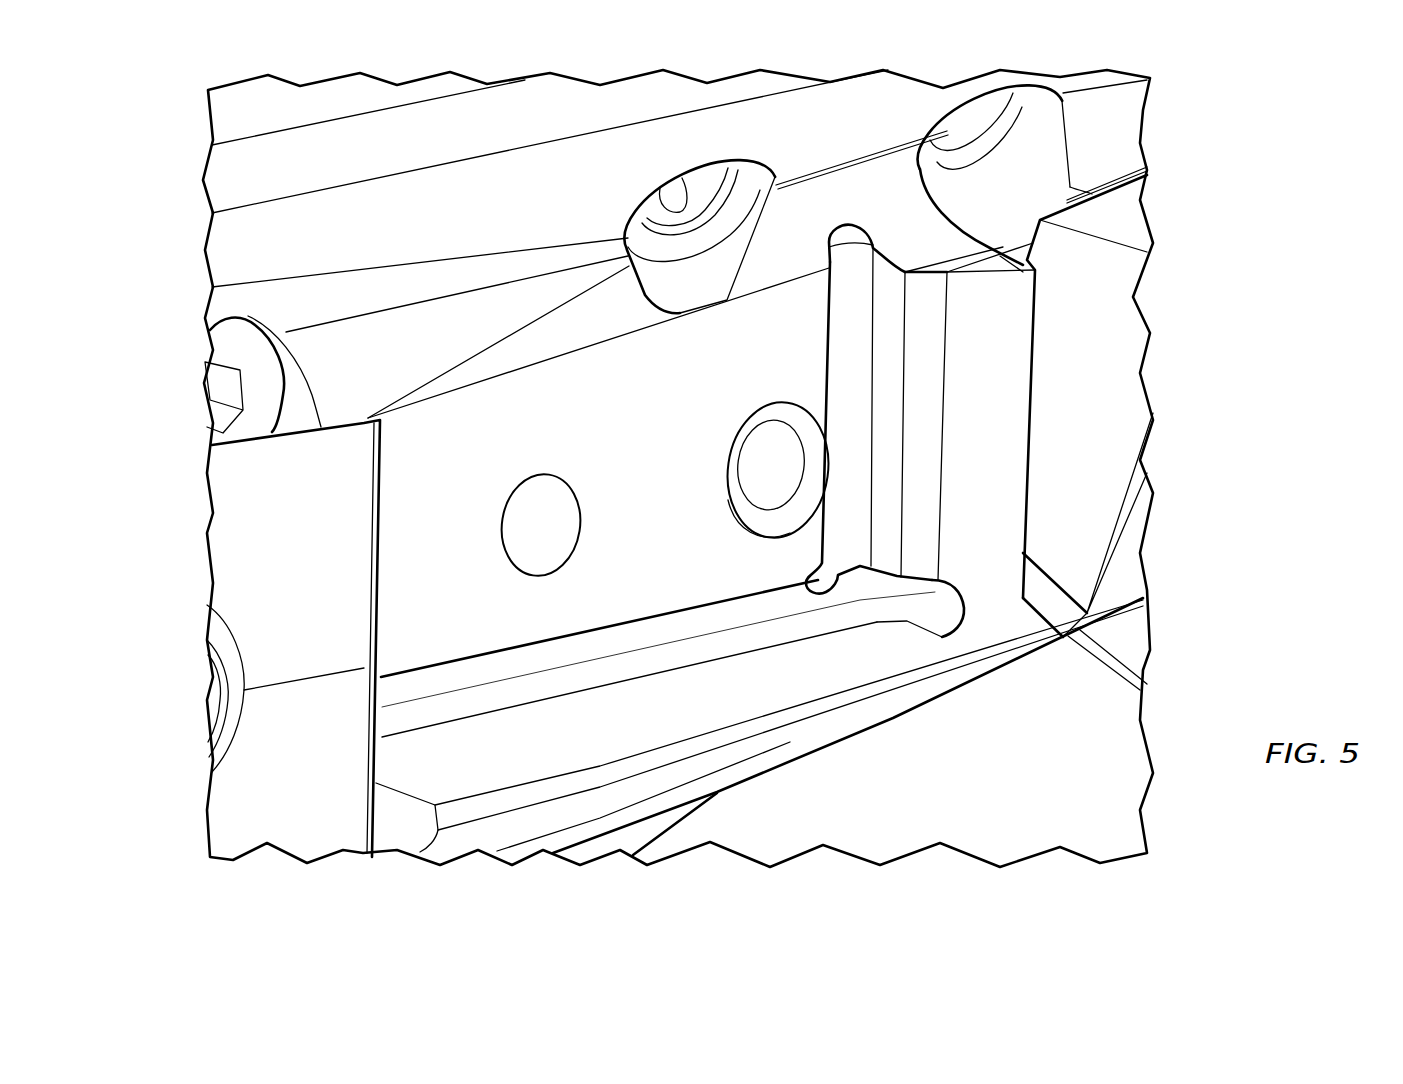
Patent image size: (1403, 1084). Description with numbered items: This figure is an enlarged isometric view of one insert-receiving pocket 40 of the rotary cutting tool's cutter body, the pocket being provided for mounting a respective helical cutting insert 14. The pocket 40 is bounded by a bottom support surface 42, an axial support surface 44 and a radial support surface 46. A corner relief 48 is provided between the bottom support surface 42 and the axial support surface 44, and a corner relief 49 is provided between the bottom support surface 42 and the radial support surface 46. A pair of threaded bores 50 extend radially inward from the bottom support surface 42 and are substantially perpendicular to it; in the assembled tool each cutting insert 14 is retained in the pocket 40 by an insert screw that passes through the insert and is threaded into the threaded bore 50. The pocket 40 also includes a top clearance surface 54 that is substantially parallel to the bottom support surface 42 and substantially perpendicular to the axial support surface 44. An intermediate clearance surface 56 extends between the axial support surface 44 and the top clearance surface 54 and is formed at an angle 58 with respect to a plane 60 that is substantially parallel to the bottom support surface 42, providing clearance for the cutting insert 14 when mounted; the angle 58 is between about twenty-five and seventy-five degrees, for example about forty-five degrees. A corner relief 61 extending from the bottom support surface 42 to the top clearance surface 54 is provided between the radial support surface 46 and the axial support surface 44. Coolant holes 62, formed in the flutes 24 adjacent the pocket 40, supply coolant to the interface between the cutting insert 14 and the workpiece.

The helical cutting insert 14 is at (302, 418).
The flute 24 is at (440, 332).
The insert-receiving pocket 40 is at (912, 656).
The bottom support surface 42 is at (579, 397).
The axial support surface 44 is at (886, 447).
The radial support surface 46 is at (720, 712).
The corner relief 48 is at (856, 238).
The corner relief 49 is at (556, 681).
The threaded bore 50 is at (530, 493).
The top clearance surface 54 is at (990, 592).
The intermediate clearance surface 56 is at (923, 360).
The angle 58 is at (928, 297).
The plane 60 is at (938, 255).
The corner relief 61 is at (952, 596).
The coolant hole 62 is at (678, 206).